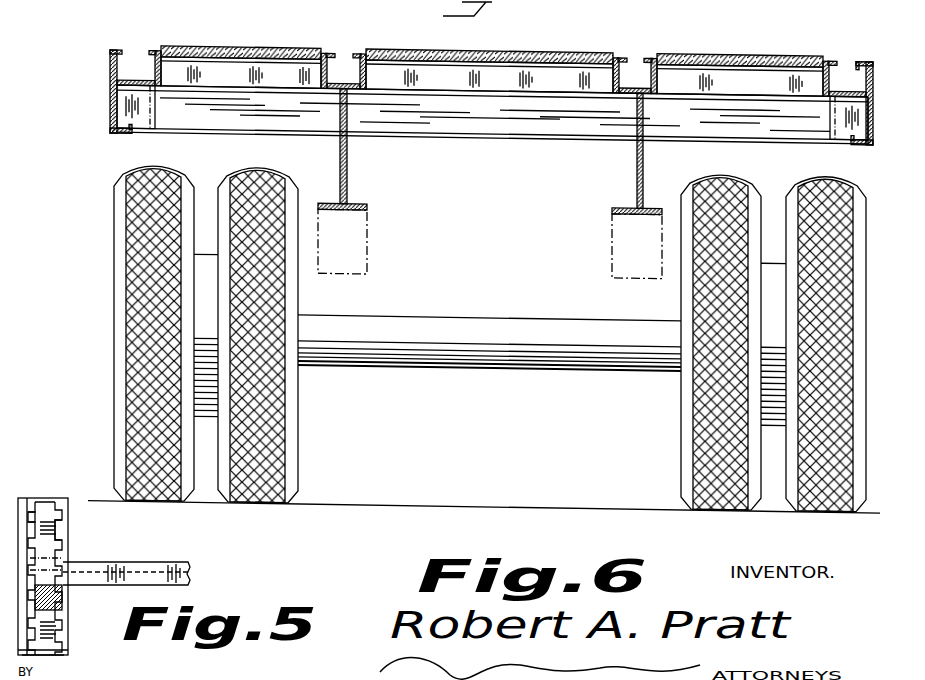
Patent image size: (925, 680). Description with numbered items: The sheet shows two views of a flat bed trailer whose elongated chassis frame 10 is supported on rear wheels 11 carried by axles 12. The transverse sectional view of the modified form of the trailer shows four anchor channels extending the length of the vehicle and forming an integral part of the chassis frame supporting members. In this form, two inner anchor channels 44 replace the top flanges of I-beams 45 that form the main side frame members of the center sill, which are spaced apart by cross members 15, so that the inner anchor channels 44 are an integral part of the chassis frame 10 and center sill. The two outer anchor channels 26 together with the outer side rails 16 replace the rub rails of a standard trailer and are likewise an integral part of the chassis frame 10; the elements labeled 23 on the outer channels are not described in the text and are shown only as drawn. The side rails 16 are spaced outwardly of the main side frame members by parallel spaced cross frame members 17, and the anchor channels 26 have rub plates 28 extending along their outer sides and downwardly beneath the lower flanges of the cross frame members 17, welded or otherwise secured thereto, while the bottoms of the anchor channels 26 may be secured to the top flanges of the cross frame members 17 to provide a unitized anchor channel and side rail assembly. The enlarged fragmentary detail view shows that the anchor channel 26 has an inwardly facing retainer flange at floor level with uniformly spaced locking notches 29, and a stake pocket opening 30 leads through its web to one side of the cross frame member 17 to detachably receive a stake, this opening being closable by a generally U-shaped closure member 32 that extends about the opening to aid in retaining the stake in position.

In FIG. 6, the chassis frame 10 is at (211, 134).
In FIG. 6, the rear wheels 11 is at (163, 503).
In FIG. 6, the axles 12 is at (512, 366).
In FIG. 6, the cross members 15 is at (459, 137).
In FIG. 6, the outer side rails 16 is at (101, 92).
In FIG. 5, the outer side rails 16 is at (12, 524).
In FIG. 6, the cross frame members 17 is at (243, 134).
In FIG. 5, the cross frame members 17 is at (182, 538).
In FIG. 6, the container box 23 is at (244, 46).
In FIG. 6, the anchor channels 26 is at (116, 50).
In FIG. 6, the rub plates 28 is at (108, 118).
In FIG. 5, the rub plates 28 is at (5, 652).
In FIG. 5, the locking notches 29 is at (30, 534).
In FIG. 5, the stake pocket openings 30 is at (62, 590).
In FIG. 6, the closure members 32 is at (142, 110).
In FIG. 5, the closure members 32 is at (62, 634).
In FIG. 6, the anchor channels 44 is at (366, 52).
In FIG. 6, the I-beams 45 is at (347, 165).